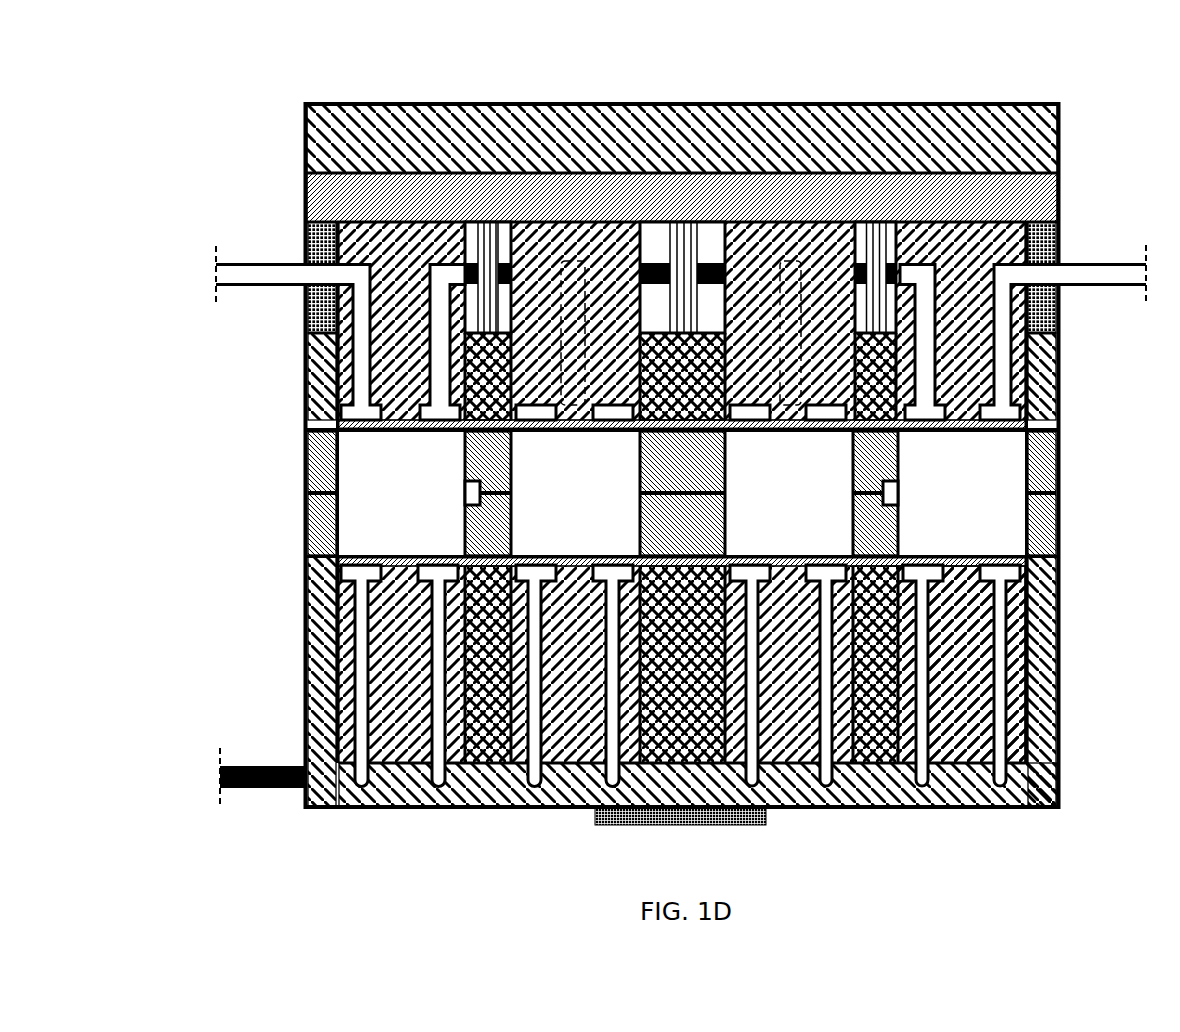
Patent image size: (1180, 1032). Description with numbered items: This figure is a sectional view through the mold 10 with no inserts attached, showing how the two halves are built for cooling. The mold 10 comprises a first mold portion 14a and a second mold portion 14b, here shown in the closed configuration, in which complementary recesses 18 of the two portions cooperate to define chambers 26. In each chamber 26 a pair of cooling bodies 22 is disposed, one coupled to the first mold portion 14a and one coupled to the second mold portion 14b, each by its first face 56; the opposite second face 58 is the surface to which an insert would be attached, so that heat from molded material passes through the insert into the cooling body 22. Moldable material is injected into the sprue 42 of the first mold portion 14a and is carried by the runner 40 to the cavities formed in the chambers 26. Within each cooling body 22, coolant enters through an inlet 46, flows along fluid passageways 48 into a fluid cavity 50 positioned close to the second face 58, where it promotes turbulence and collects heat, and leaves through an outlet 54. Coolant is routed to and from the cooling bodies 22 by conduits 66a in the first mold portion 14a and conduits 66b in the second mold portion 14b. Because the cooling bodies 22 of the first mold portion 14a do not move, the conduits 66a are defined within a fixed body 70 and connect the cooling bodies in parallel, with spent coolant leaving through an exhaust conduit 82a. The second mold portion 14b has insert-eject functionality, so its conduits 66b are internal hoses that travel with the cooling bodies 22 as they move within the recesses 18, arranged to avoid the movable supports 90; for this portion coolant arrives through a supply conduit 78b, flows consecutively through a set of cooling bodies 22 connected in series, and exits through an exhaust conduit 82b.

The mold 10 is at (141, 89).
The first mold portion 14a is at (320, 787).
The second mold portion 14b is at (1049, 95).
The recess 18 is at (1000, 237).
The cooling body 22 is at (340, 377).
The chamber 26 is at (976, 445).
The runner 40 is at (873, 490).
The sprue 42 is at (677, 817).
The inlet 46 is at (326, 257).
The fluid passageway 48 is at (778, 252).
The fluid cavity 50 is at (328, 408).
The outlet 54 is at (455, 266).
The first face 56 is at (1051, 145).
The second face 58 is at (365, 423).
The conduit 66a is at (990, 772).
The conduit 66b is at (508, 248).
The fixed body 70 is at (872, 790).
The supply conduit 78b is at (245, 276).
The exhaust conduit 82a is at (268, 780).
The exhaust conduit 82b is at (1120, 254).
The movable support 90 is at (673, 227).